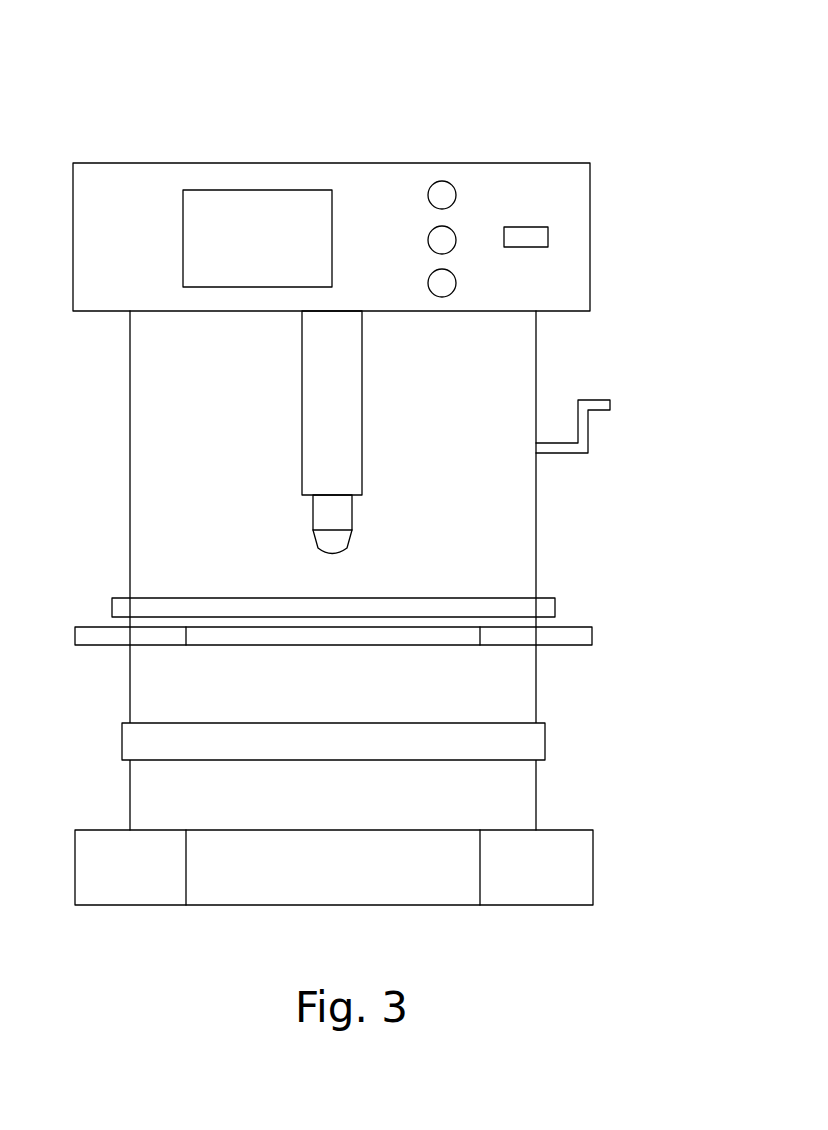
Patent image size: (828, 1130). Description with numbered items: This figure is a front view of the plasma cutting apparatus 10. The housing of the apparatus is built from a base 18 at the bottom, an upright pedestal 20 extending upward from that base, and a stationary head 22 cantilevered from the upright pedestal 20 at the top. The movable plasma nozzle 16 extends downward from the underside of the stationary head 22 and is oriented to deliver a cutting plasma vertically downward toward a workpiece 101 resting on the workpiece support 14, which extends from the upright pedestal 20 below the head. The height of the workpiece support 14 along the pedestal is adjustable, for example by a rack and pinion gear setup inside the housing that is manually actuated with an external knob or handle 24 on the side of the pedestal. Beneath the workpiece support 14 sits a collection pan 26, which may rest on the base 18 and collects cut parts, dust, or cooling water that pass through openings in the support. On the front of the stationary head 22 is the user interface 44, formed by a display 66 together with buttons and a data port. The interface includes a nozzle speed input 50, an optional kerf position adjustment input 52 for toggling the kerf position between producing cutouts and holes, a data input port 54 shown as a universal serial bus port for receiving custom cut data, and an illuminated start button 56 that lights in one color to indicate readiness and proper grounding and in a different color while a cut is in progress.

The plasma cutting apparatus 10 is at (327, 80).
The workpiece support 14 is at (587, 636).
The movable plasma nozzle 16 is at (305, 467).
The base 18 is at (580, 865).
The upright pedestal 20 is at (522, 548).
The stationary head 22 is at (560, 170).
The handle 24 is at (590, 435).
The collection pan 26 is at (537, 745).
The user interface 44 is at (420, 180).
The nozzle speed input 50 is at (449, 200).
The kerf position adjustment input 52 is at (457, 245).
The data input port 54 is at (548, 236).
The illuminated start button 56 is at (457, 290).
The display 66 is at (247, 213).
The workpiece 101 is at (555, 605).